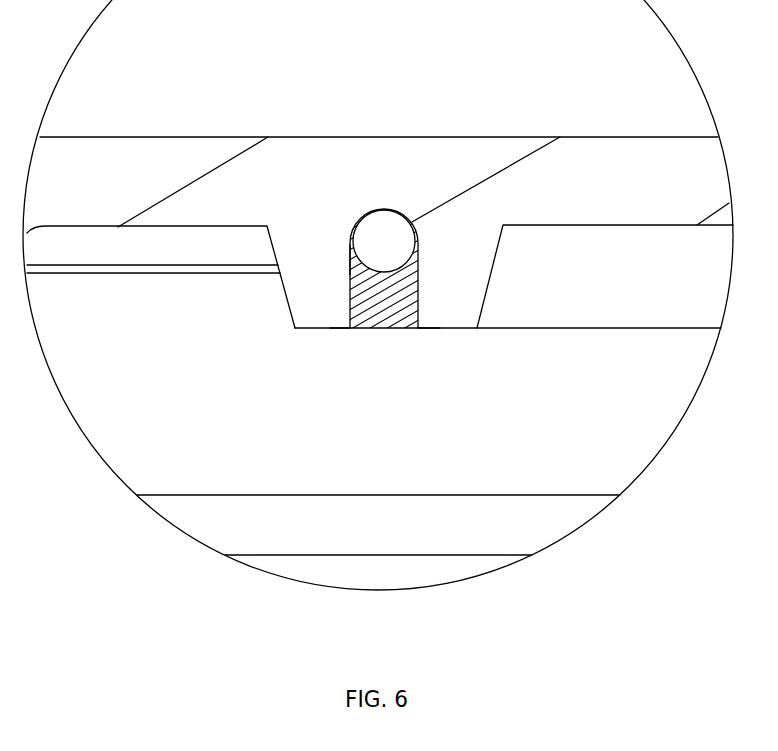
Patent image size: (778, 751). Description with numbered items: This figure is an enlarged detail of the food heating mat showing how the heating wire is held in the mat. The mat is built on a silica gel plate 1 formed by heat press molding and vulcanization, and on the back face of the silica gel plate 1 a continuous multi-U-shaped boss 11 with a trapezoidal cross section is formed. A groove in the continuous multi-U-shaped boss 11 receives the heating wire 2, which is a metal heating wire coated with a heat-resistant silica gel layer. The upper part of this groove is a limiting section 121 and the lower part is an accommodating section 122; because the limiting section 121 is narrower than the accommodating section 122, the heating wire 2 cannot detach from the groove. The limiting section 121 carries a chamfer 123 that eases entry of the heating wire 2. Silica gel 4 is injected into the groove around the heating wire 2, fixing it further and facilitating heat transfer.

The silica gel plate 1 is at (568, 160).
The heating wire 2 is at (382, 228).
The silica gel 4 is at (373, 330).
The continuous multi-U-shaped boss 11 is at (487, 330).
The limiting section 121 is at (427, 330).
The accommodating section 122 is at (350, 255).
The chamfer 123 is at (350, 328).